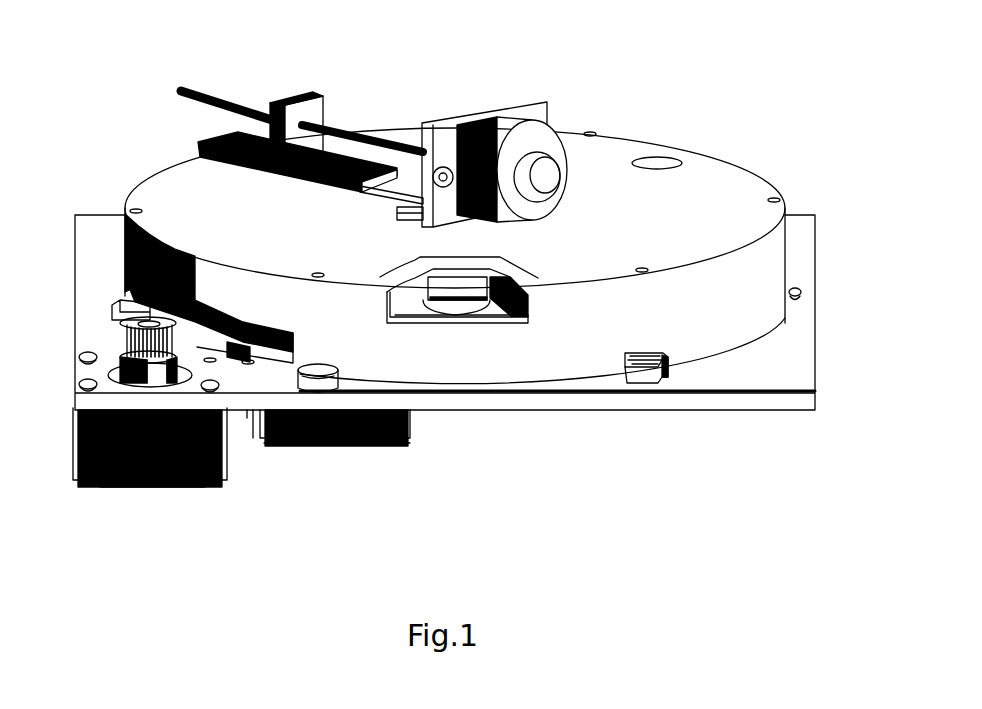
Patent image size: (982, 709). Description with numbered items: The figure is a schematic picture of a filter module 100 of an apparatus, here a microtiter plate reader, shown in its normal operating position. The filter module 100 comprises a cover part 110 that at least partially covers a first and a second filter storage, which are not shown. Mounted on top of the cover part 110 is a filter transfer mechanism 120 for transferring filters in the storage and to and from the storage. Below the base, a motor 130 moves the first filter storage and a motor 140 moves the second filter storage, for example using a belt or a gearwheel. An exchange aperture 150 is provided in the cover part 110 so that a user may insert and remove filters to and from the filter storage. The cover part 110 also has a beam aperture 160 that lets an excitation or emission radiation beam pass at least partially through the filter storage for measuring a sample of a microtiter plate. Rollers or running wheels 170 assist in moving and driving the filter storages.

The filter module 100 is at (801, 39).
The cover part 110 is at (157, 195).
The filter transfer mechanism 120 is at (272, 103).
The motor 130 is at (383, 447).
The motor 140 is at (140, 488).
The exchange aperture 150 is at (488, 330).
The beam aperture 160 is at (666, 158).
The rollers or running wheels 170 is at (647, 380).